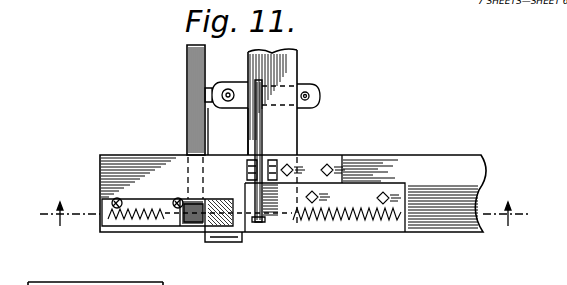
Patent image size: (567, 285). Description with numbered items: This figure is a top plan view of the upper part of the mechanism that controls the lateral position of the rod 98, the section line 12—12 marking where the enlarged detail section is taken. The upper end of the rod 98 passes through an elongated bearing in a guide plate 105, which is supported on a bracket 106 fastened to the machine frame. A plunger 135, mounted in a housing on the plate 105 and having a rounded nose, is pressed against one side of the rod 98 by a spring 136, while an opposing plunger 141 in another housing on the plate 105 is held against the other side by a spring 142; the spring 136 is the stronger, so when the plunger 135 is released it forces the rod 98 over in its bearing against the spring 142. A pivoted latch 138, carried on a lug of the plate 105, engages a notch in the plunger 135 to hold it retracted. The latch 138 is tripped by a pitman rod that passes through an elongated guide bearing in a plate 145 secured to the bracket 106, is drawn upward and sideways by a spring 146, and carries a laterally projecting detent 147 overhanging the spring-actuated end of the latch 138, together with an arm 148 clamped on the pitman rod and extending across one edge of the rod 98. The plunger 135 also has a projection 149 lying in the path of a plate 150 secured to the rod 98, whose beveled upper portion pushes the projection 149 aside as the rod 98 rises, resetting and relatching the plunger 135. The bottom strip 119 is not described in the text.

The section line 12— 12 is at (285, 216).
The rod 98 is at (196, 226).
The guide plate 105 is at (293, 193).
The bracket 106 is at (290, 127).
The base 119 is at (42, 281).
The plunger 135 is at (303, 232).
The spring 136 is at (387, 233).
The pivoted latch 138 is at (258, 135).
The plunger 141 is at (182, 220).
The spring 142 is at (122, 224).
The plate 145 is at (311, 88).
The spring 146 is at (318, 99).
The detent 147 is at (213, 80).
The arm 148 is at (200, 113).
The projection 149 is at (240, 234).
The plate 150 is at (231, 242).